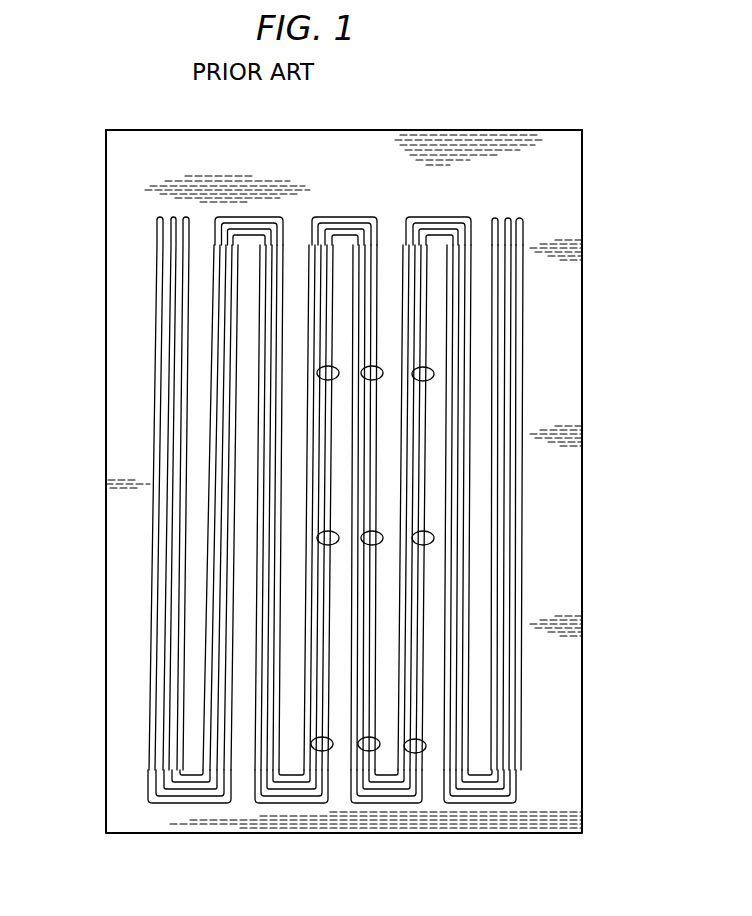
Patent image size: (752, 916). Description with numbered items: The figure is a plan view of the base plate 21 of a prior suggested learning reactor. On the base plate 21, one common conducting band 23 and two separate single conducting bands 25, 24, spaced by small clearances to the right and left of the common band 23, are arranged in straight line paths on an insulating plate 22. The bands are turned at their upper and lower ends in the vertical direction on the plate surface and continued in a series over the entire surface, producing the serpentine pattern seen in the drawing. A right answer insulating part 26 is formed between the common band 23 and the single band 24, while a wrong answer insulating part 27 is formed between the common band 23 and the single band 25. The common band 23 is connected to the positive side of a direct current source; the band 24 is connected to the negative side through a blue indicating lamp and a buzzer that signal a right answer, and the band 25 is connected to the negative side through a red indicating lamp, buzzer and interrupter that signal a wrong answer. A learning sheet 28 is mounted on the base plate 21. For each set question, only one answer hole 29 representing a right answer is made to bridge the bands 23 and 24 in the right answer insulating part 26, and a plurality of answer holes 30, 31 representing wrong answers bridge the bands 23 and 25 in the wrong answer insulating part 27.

The base plate 21 is at (589, 206).
The insulating plate 22 is at (452, 148).
The common conducting band 23 is at (173, 289).
The single conducting band 24 is at (187, 322).
The single conducting band 25 is at (162, 246).
The right answer insulating part 26 is at (179, 432).
The wrong answer insulating part 27 is at (165, 380).
The learning sheet 28 is at (565, 405).
The answer hole 29 is at (373, 366).
The answer hole 30 is at (331, 367).
The answer hole 31 is at (435, 373).